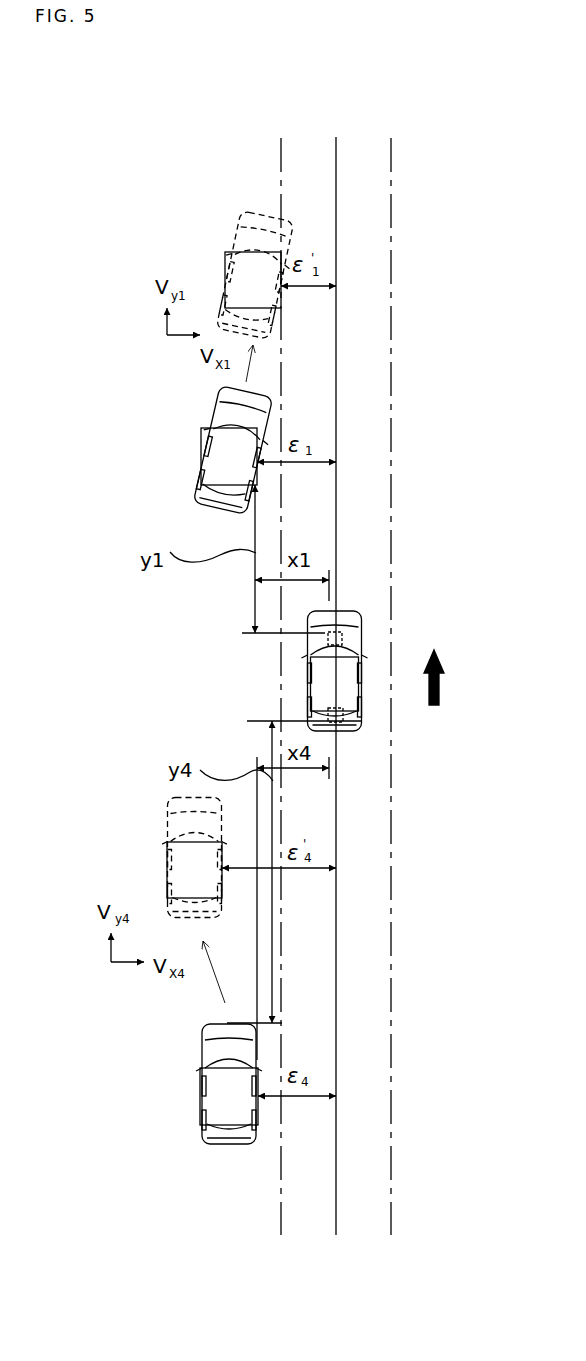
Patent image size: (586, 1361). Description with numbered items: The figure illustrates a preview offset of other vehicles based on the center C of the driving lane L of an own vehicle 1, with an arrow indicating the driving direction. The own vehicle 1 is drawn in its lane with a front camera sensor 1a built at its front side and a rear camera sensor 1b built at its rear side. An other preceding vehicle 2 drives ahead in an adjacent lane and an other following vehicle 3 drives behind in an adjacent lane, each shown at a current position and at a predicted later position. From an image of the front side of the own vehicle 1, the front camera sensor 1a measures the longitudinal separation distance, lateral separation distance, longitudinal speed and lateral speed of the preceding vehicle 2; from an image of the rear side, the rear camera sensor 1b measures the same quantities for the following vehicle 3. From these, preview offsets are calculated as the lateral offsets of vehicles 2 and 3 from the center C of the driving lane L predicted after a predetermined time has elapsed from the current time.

The own vehicle 1 is at (406, 660).
The front camera sensor 1a is at (344, 633).
The rear camera sensor 1b is at (362, 719).
The other preceding vehicle 2 is at (255, 227).
The other following vehicle 3 is at (188, 819).
The center of driving lane C is at (336, 194).
The driving lane L is at (391, 194).